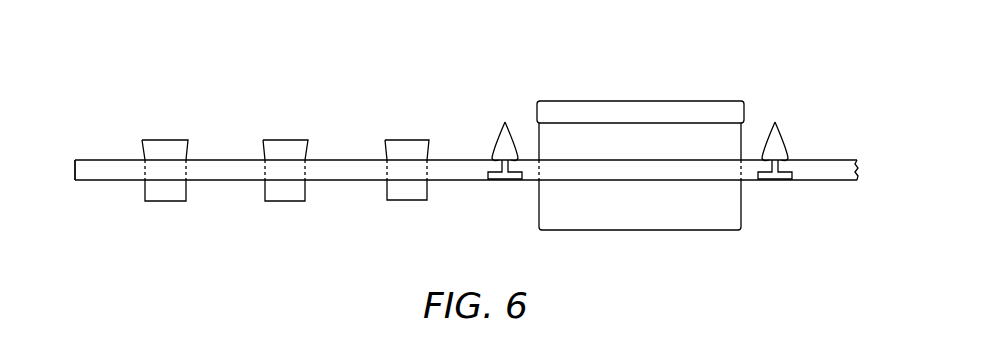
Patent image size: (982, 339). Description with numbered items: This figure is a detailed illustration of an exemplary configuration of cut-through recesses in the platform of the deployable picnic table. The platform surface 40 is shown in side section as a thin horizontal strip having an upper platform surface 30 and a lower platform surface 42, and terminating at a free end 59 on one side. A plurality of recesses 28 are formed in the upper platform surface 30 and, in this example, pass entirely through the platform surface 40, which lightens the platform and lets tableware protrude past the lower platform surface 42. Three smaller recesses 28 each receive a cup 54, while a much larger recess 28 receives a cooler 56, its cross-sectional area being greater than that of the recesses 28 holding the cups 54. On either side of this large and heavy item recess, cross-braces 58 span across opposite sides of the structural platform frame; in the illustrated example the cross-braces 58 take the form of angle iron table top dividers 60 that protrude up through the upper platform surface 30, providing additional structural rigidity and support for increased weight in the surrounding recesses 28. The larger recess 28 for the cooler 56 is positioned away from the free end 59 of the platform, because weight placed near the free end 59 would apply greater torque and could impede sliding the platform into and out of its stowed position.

The recesses 28 is at (184, 170).
The upper platform surface 30 is at (459, 160).
The platform surface 40 is at (832, 160).
The lower platform surface 42 is at (459, 181).
The cups 54 is at (410, 140).
The cooler 56 is at (637, 231).
The cross-braces 58 is at (505, 190).
The free end 59 is at (74, 170).
The angle iron table top dividers 60 is at (639, 128).